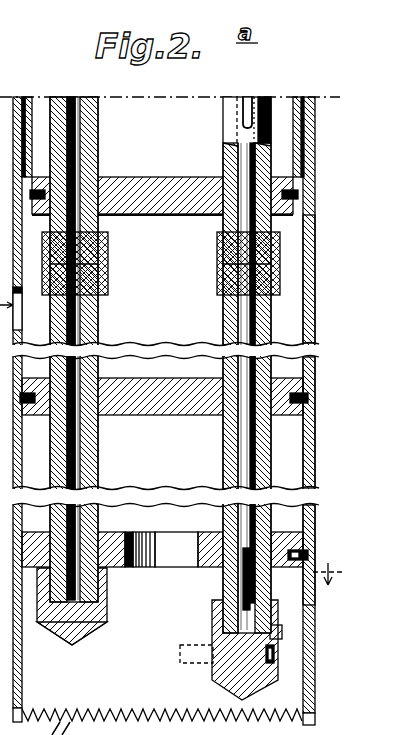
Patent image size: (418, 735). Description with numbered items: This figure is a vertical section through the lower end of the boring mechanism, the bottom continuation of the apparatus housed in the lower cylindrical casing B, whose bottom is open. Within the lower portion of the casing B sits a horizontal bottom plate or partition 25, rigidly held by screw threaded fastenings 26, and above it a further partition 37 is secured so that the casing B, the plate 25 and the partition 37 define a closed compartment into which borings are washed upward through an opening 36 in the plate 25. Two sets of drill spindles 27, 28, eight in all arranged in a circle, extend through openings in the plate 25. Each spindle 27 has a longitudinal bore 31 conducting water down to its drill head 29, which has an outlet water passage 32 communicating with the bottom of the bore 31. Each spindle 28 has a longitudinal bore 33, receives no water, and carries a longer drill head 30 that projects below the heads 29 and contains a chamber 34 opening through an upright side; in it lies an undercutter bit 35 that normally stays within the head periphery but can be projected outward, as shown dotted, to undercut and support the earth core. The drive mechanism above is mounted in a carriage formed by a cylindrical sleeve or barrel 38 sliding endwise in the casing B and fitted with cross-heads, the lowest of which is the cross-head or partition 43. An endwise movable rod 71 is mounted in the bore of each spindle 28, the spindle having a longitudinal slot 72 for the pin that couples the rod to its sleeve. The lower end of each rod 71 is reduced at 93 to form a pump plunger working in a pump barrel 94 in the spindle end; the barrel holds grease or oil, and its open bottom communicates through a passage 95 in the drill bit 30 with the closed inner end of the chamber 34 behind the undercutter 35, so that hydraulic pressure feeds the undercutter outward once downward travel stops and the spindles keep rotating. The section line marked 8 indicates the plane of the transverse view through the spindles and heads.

The section line 8 is at (336, 573).
The bottom plate or partition 25 is at (123, 562).
The screw threaded fastenings 26 is at (315, 556).
The drill spindles 27 is at (88, 478).
The drill spindles 28 is at (233, 99).
The drill head 29 is at (108, 612).
The drill head 30 is at (213, 614).
The longitudinal bore 31 is at (77, 460).
The outlet water passage 32 is at (56, 639).
The longitudinal bore 33 is at (262, 447).
The chamber 34 is at (275, 652).
The undercutter bit 35 is at (214, 653).
The opening 36 is at (170, 543).
The partition 37 is at (147, 390).
The cylindrical sleeve or barrel 38 is at (294, 103).
The cross-head or partition 43 is at (160, 190).
The endwise movable rod 71 is at (311, 332).
The longitudinal slot 72 is at (236, 126).
The pump plunger 93 is at (301, 484).
The pump barrel 94 is at (310, 527).
The passage 95 is at (279, 636).
The lower cylindrical casing B is at (312, 686).